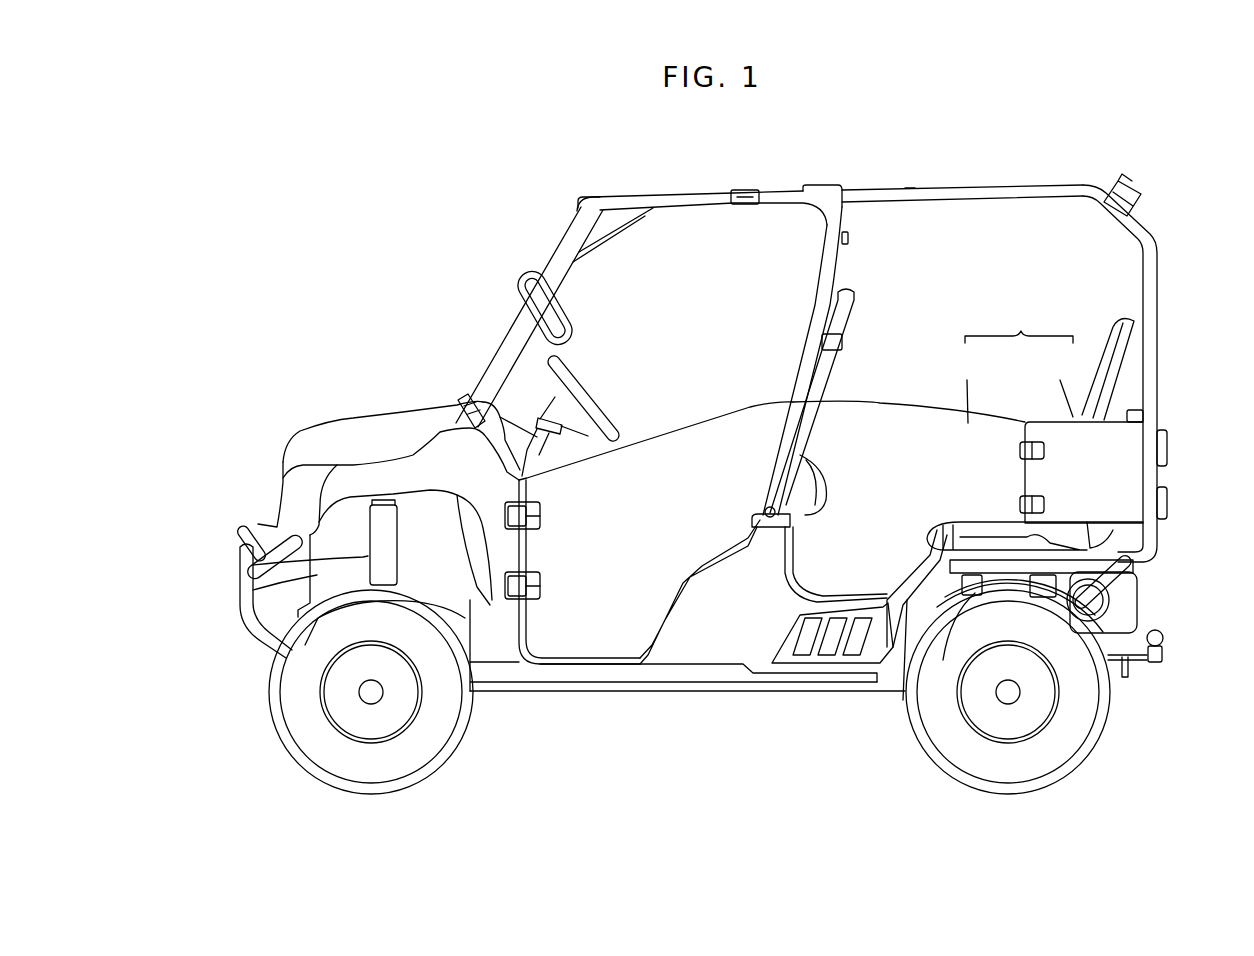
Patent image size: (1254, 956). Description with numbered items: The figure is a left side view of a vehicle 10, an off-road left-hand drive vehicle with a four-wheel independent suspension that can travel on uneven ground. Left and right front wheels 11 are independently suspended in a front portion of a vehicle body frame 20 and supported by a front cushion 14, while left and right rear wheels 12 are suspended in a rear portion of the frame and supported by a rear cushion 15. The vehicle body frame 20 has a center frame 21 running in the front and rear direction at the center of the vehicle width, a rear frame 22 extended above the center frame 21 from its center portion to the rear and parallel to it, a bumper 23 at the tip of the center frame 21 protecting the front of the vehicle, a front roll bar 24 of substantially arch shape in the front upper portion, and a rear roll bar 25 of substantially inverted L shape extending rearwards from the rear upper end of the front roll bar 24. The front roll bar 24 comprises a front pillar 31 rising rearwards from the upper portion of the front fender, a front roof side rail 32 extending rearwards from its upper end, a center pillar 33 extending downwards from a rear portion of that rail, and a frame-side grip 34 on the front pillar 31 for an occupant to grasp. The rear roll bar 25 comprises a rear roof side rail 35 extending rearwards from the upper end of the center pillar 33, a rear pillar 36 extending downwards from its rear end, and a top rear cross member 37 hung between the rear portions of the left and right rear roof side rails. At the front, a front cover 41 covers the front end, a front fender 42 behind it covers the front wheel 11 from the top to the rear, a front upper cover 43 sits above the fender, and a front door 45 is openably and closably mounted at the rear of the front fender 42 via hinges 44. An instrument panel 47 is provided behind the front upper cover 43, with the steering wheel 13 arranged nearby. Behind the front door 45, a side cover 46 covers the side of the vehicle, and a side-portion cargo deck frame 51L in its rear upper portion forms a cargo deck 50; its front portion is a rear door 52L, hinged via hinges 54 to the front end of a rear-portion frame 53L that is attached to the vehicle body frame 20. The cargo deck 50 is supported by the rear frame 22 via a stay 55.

The vehicle 10 is at (405, 215).
The front wheel 11 is at (282, 742).
The rear wheel 12 is at (1093, 752).
The steering wheel 13 is at (562, 357).
The front cushion 14 is at (355, 563).
The rear cushion 15 is at (975, 592).
The vehicle body frame 20 is at (754, 696).
The center frame 21 is at (528, 690).
The rear frame 22 is at (1138, 590).
The bumper 23 is at (246, 560).
The front roll bar 24 is at (695, 190).
The rear roll bar 25 is at (1004, 186).
The front pillar 31 is at (537, 290).
The front roof side rail 32 is at (620, 196).
The center pillar 33 is at (802, 357).
The frame-side grip 34 is at (565, 302).
The rear roof side rail 35 is at (910, 188).
The rear pillar 36 is at (1160, 340).
The top rear cross member 37 is at (1134, 184).
The front cover 41 is at (282, 500).
The front fender 42 is at (418, 448).
The front upper cover 43 is at (330, 427).
The hinge 44 is at (469, 612).
The front door 45 is at (615, 650).
The side cover 46 is at (713, 642).
The instrument panel 47 is at (516, 415).
The cargo deck 50 is at (940, 388).
The side-portion cargo deck frame 51L is at (1019, 322).
The rear door 52L is at (970, 417).
The rear-portion frame 53L is at (1073, 416).
The hinge 54 is at (1046, 507).
The stay 55 is at (1122, 535).